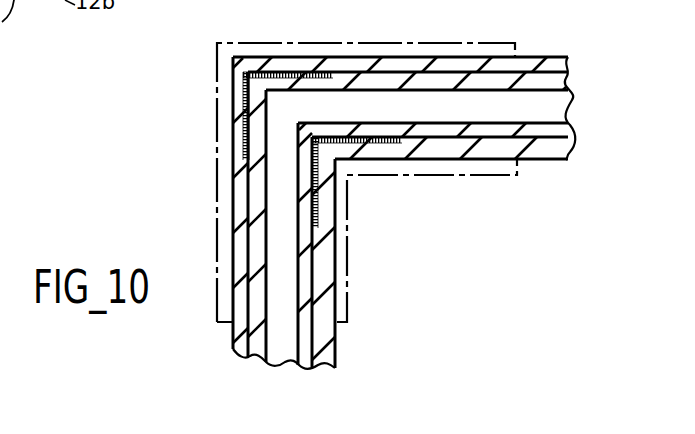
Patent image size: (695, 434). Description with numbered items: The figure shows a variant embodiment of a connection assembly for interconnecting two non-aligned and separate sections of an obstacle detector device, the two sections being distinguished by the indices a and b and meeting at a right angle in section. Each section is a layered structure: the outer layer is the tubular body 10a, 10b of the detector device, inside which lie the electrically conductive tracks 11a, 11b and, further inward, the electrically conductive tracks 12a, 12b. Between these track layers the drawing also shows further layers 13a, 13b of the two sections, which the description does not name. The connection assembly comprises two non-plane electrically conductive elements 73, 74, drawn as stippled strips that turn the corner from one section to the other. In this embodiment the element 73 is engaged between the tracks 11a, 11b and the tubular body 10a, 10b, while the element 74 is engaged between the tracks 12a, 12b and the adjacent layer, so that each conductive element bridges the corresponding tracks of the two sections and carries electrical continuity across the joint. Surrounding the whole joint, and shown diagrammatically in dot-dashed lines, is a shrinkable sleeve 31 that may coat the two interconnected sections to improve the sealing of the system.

The shrinkable sleeve 31 is at (476, 42).
The tubular body 10a is at (560, 64).
The tubular body 10b is at (235, 348).
The electrically conductive track 11a is at (562, 82).
The electrically conductive track 11b is at (257, 360).
The electrically conductive track 12a is at (563, 140).
The electrically conductive track 12b is at (308, 368).
The core layer, horizontal arm 13a is at (560, 108).
The core layer, vertical arm 13b is at (282, 352).
The non-plane electrically conductive element 73 is at (235, 118).
The non-plane electrically conductive element 74 is at (318, 180).